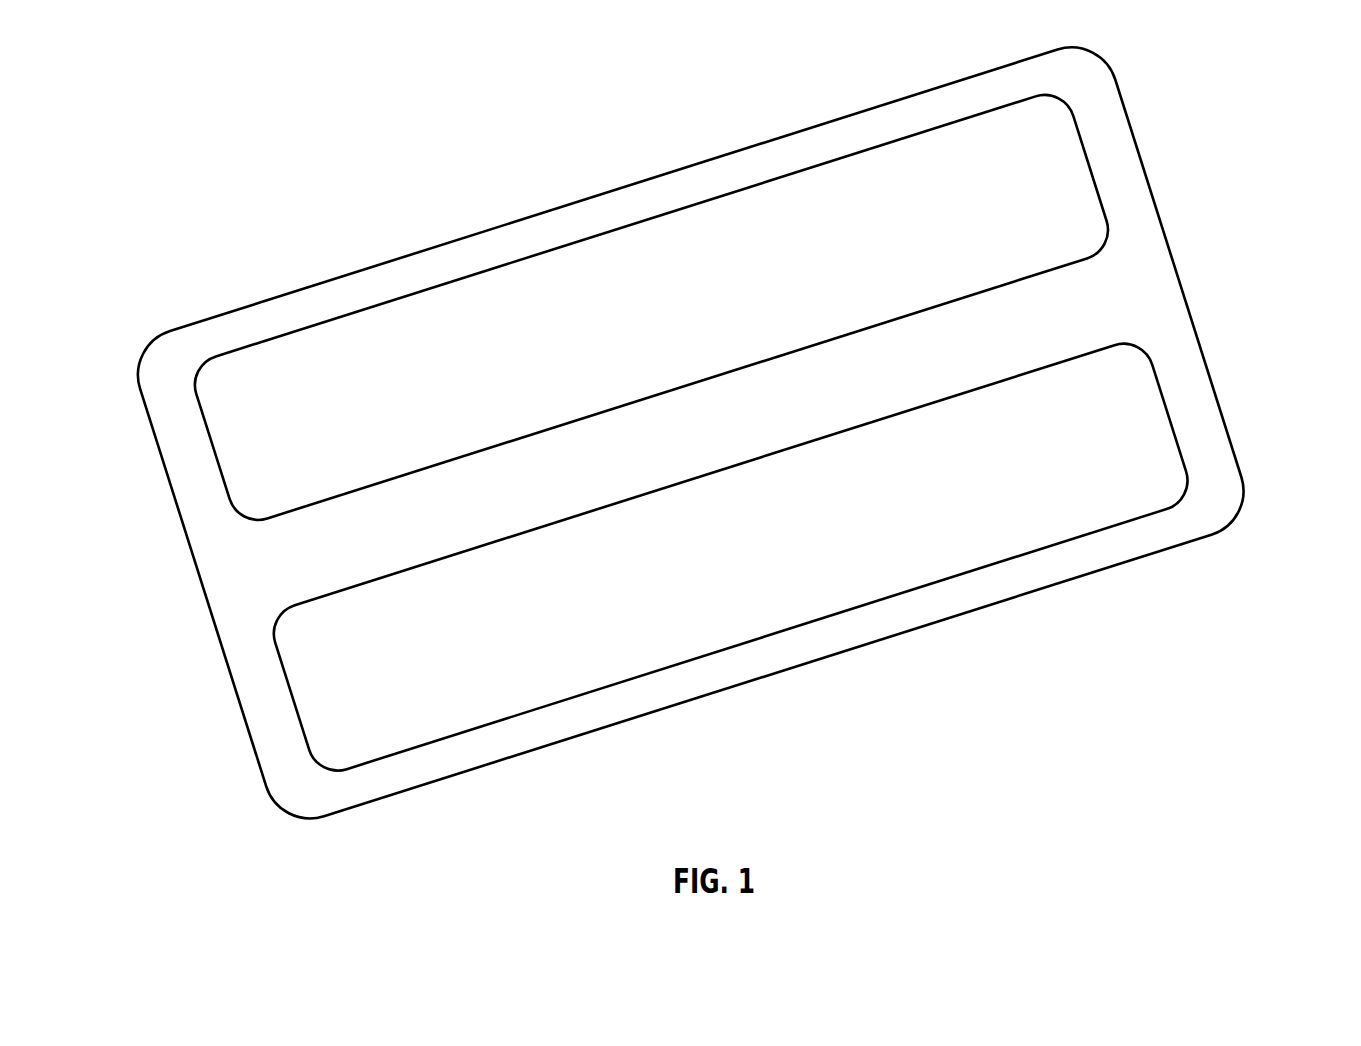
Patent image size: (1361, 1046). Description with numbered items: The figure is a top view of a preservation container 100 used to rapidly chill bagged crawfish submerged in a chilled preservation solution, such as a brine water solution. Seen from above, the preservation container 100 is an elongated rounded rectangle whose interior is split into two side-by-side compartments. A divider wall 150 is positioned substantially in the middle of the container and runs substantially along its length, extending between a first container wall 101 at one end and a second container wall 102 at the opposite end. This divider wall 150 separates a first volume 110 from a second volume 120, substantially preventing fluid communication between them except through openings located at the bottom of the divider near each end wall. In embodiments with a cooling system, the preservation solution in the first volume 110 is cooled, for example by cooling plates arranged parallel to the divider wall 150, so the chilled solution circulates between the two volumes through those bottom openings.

The preservation container 100 is at (383, 258).
The first container wall 101 is at (232, 502).
The second container wall 102 is at (1098, 193).
The first volume 110 is at (932, 553).
The second volume 120 is at (1012, 140).
The divider wall 150 is at (380, 538).